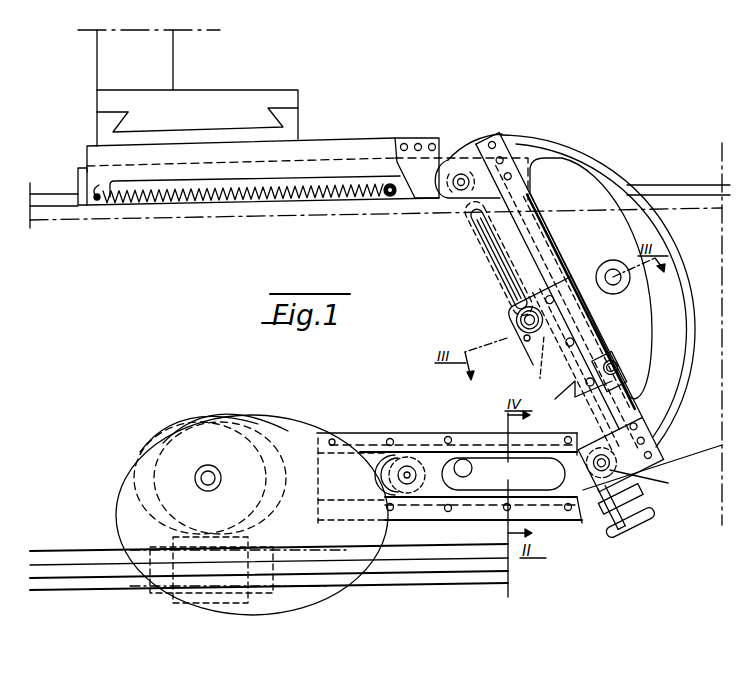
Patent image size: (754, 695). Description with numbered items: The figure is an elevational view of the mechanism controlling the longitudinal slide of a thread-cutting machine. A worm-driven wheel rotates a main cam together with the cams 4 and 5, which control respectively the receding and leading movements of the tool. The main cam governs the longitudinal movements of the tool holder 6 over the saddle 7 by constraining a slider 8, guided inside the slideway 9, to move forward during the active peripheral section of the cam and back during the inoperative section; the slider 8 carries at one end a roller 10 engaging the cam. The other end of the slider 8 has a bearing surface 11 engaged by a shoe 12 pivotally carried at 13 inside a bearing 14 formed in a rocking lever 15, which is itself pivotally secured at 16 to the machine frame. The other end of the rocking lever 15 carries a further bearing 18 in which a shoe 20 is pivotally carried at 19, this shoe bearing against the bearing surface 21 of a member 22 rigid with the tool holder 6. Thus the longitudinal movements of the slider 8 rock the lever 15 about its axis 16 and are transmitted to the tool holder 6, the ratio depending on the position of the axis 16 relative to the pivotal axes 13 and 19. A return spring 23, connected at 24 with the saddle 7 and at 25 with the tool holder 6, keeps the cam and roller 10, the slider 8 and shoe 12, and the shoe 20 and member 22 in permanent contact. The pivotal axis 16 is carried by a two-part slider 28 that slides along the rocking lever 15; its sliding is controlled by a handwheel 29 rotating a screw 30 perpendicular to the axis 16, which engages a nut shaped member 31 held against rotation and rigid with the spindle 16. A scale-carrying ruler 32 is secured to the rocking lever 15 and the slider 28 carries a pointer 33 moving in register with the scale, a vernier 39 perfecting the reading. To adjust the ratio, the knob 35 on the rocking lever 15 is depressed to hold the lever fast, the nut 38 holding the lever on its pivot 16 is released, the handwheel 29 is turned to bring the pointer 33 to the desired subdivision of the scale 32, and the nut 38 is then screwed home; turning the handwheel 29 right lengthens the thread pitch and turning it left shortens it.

The cam 4 is at (238, 418).
The cam 5 is at (158, 418).
The tool holder 6 is at (318, 153).
The saddle 7 is at (82, 206).
The slider 8 is at (432, 460).
The slideway 9 is at (349, 435).
The roller 10 is at (409, 456).
The bearing surface 11 is at (590, 505).
The shoe 12 is at (619, 529).
The pivot 13 is at (660, 455).
The bearing 14 is at (668, 483).
The rocking lever 15 is at (548, 152).
The pivotal axis 16 is at (521, 320).
The bearing 18 is at (498, 132).
The pivot 19 is at (462, 192).
The shoe 20 is at (456, 190).
The bearing surface 21 is at (441, 150).
The member 22 is at (413, 140).
The return spring 23 is at (368, 205).
The connection point 24 is at (390, 198).
The connection point 25 is at (95, 208).
The slider 28 is at (555, 398).
The handwheel 29 is at (648, 518).
The screw 30 is at (503, 258).
The nut shaped member 31 is at (560, 302).
The scale-carrying ruler 32 is at (588, 324).
The pointer 33 is at (615, 357).
The knob 35 is at (614, 276).
The nut 38 is at (525, 340).
The vernier 39 is at (641, 496).